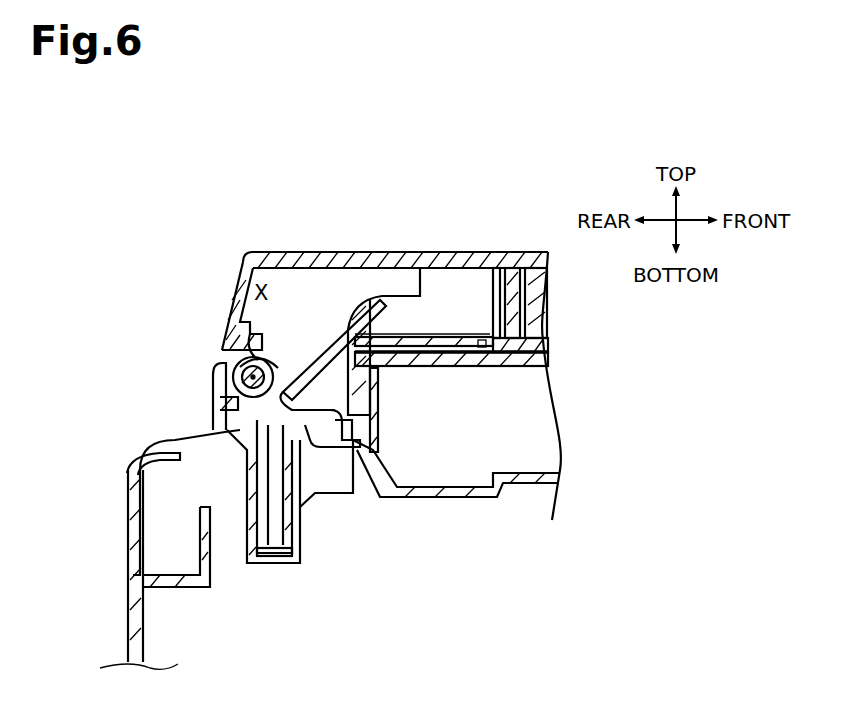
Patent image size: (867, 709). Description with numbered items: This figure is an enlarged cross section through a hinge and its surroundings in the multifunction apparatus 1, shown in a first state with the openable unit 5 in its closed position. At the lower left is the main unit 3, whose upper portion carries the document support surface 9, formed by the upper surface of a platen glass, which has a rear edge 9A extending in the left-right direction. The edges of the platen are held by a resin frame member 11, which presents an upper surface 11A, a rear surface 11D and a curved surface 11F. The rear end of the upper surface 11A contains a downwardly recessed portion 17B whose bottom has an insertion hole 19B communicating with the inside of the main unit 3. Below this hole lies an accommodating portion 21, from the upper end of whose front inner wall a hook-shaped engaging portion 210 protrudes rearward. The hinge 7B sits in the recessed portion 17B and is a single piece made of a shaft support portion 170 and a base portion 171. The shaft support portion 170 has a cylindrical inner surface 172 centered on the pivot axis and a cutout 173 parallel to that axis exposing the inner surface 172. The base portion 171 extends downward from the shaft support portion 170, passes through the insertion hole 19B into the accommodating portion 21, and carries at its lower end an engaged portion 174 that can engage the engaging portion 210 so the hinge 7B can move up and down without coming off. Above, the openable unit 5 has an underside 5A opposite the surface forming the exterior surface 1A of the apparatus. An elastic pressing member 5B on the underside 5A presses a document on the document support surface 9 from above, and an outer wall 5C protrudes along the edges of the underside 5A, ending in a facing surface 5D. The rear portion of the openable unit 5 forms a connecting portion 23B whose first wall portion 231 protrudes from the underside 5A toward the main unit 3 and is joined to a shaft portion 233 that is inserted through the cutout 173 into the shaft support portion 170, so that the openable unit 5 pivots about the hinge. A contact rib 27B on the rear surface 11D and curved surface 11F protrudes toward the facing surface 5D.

The multifunction apparatus 1 is at (240, 226).
The exterior surface 1A is at (272, 252).
The main unit 3 is at (126, 529).
The openable unit 5 is at (532, 268).
The underside 5A is at (445, 280).
The pressing member 5B is at (540, 347).
The outer wall 5C is at (468, 290).
The facing surface 5D is at (224, 338).
The hinge 7B is at (265, 544).
The document support surface 9 is at (528, 366).
The rear edge 9A is at (325, 382).
The frame member 11 is at (476, 302).
The upper surface 11A is at (468, 338).
The rear surface 11D is at (215, 412).
The curved surface 11F is at (222, 366).
The recessed portion 17B is at (364, 378).
The insertion hole 19B is at (362, 412).
The accommodating portion 21 is at (238, 552).
The connecting portion 23B is at (331, 280).
The contact rib 27B is at (212, 377).
The shaft support portion 170 is at (235, 367).
The base portion 171 is at (280, 513).
The inner surface 172 is at (228, 432).
The cutout 173 is at (293, 398).
The engaged portion 174 is at (300, 553).
The engaging portion 210 is at (362, 448).
The first wall portion 231 is at (403, 282).
The shaft portion 233 is at (258, 365).